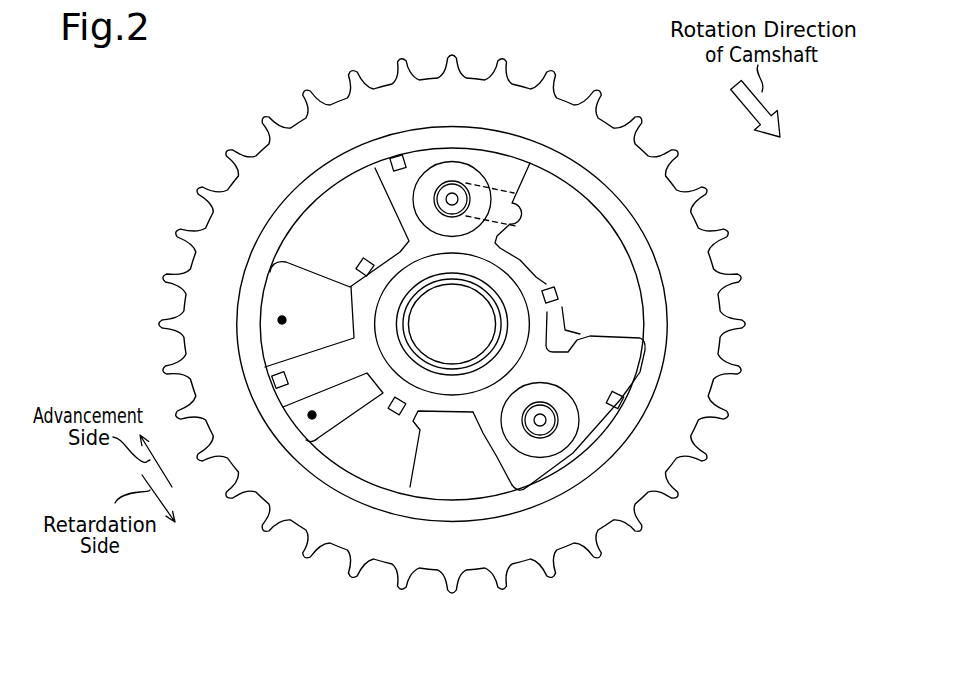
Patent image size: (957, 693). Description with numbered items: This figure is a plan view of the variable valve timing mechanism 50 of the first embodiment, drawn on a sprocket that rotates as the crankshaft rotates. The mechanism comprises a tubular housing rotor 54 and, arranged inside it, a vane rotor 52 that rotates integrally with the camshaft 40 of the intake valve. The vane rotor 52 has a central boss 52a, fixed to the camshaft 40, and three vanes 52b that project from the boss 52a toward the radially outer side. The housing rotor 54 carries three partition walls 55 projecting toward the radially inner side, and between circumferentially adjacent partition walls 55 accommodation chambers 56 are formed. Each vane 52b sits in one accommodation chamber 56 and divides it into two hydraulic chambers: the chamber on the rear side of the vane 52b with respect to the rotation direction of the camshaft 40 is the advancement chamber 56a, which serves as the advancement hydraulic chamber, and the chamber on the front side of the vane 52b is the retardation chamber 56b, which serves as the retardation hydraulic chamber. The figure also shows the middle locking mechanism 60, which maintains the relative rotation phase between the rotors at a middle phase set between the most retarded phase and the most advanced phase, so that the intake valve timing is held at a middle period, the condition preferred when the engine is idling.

The variable valve timing mechanism 50 is at (773, 200).
The housing rotor 54 is at (627, 232).
The vane rotor 52 is at (518, 322).
The boss 52a is at (447, 400).
The vanes 52b is at (503, 457).
The partition walls 55 is at (597, 253).
The middle locking mechanism 60 is at (458, 172).
The camshaft 40 is at (413, 323).
The accommodation chambers 56 is at (102, 342).
The advancement chamber 56a is at (312, 415).
The retardation chamber 56b is at (282, 320).